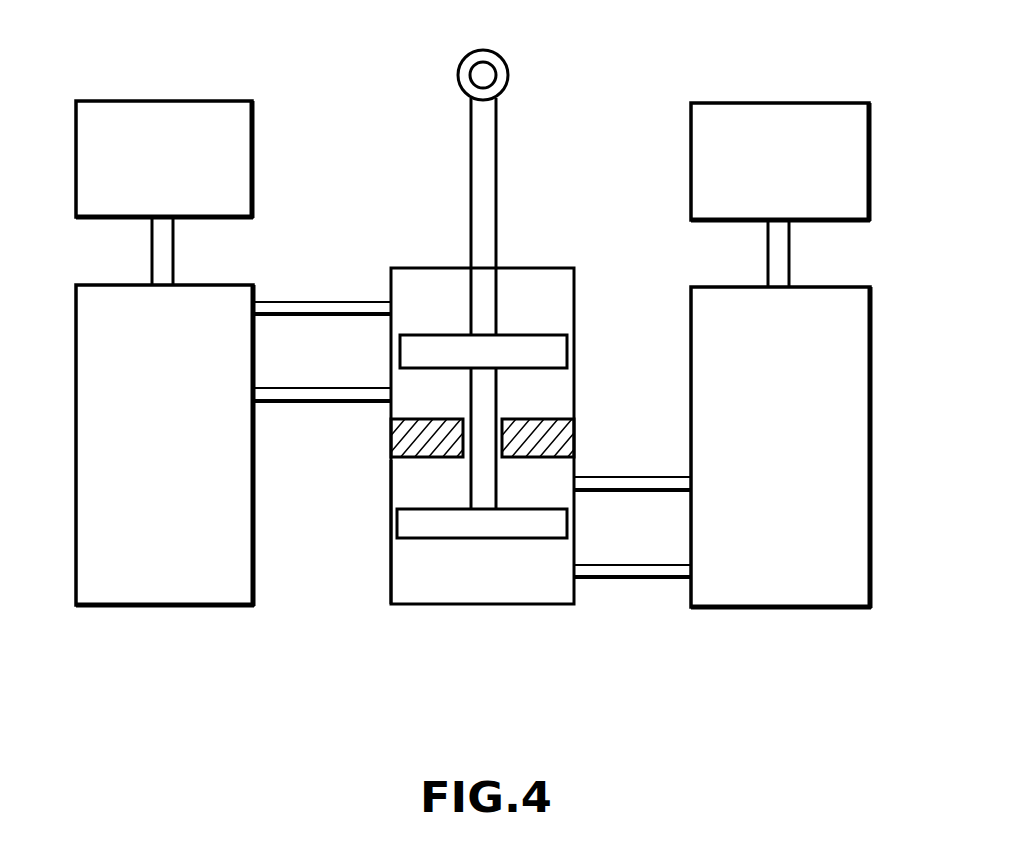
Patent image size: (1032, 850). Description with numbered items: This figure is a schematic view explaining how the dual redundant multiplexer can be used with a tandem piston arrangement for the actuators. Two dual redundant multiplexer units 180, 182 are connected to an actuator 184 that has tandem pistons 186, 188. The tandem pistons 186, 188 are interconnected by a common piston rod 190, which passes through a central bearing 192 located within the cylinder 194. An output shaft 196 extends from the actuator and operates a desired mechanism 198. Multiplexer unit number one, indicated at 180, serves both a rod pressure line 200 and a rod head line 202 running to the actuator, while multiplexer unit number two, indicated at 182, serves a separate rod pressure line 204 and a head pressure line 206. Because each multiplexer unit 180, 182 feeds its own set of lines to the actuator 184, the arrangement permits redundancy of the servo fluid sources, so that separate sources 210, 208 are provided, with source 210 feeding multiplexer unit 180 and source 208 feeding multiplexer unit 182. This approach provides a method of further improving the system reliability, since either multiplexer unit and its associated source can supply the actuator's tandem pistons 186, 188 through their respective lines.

The multiplexer unit 180 is at (110, 285).
The multiplexer unit 182 is at (862, 560).
The actuator 184 is at (526, 263).
The tandem piston 186 is at (545, 345).
The tandem piston 188 is at (552, 521).
The common piston rod 190 is at (490, 392).
The central bearing 192 is at (558, 442).
The cylinder 194 is at (390, 486).
The output shaft 196 is at (496, 152).
The desired mechanism 198 is at (501, 57).
The rod pressure line 200 is at (332, 300).
The rod head line 202 is at (345, 387).
The rod pressure line 204 is at (597, 477).
The head pressure line 206 is at (603, 579).
The source 208 is at (768, 105).
The source 210 is at (168, 100).